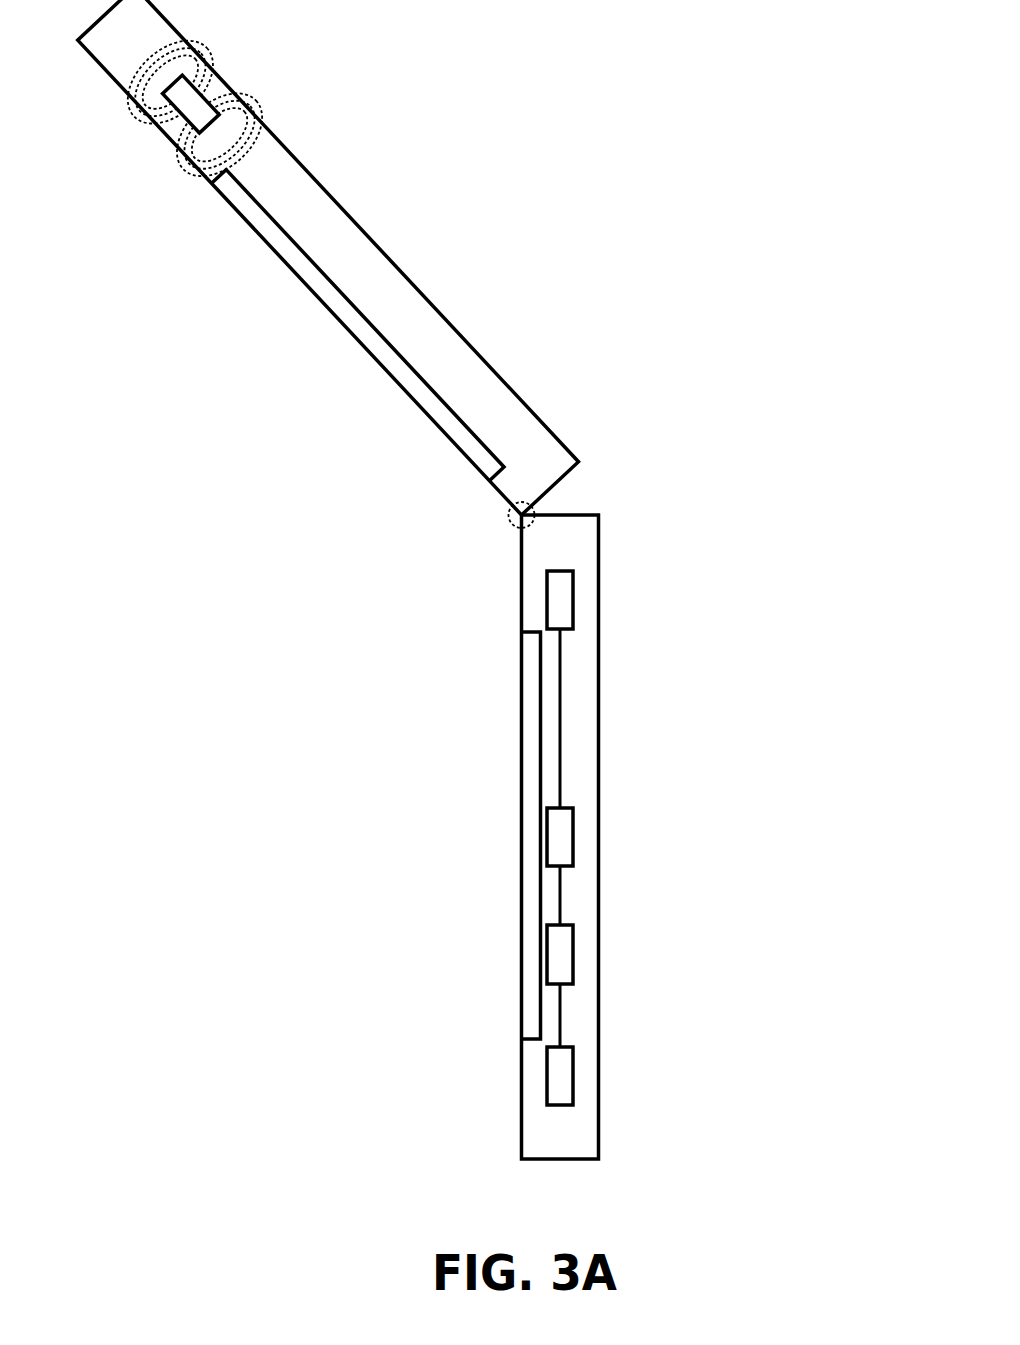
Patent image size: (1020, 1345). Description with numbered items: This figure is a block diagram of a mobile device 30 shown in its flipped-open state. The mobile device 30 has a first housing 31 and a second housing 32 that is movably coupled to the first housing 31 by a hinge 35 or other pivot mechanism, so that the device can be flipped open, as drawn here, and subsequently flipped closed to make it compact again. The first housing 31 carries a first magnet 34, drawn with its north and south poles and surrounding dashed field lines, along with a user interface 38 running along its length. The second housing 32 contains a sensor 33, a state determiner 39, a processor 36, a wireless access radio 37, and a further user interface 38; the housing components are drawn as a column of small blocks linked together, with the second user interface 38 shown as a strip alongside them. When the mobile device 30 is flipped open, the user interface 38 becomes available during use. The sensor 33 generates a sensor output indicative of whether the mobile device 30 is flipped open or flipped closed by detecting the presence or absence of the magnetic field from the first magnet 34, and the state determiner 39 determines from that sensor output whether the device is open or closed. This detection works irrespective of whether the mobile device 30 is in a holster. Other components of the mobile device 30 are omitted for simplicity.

The mobile device 30 is at (450, 579).
The first housing 31 is at (455, 332).
The second housing 32 is at (599, 718).
The sensor 33 is at (565, 1075).
The first magnet 34 is at (192, 107).
The hinge 35 is at (517, 518).
The processor 36 is at (565, 845).
The wireless access radio 37 is at (565, 598).
The user interface 38 is at (355, 331).
The state determiner 39 is at (565, 957).